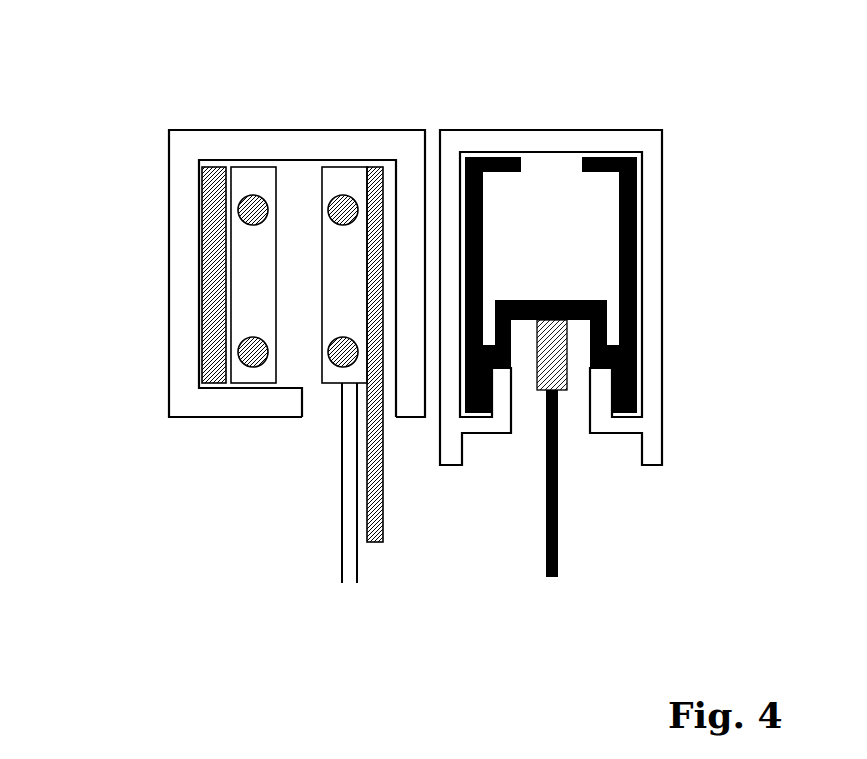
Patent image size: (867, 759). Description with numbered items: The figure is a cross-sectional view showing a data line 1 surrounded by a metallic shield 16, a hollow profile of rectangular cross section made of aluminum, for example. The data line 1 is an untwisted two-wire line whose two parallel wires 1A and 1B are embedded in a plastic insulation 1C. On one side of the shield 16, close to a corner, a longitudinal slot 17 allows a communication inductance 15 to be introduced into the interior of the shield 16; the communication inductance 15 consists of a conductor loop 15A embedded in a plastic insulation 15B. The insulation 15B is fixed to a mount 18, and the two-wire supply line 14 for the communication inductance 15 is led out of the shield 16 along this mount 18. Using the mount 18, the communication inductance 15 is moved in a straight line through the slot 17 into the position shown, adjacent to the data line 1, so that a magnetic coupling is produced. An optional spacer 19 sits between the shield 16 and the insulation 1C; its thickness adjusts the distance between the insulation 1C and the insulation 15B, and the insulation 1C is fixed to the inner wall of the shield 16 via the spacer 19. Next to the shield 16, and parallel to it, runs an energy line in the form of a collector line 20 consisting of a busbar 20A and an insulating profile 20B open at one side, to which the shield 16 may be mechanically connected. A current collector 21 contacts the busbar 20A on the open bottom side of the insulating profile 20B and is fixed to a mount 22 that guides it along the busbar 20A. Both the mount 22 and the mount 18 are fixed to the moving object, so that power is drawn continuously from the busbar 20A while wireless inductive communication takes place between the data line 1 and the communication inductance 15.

The data line 1 is at (181, 244).
The wire 1A is at (252, 198).
The wire 1B is at (247, 363).
The insulation 1C is at (245, 298).
The two-wire supply line 14 is at (343, 570).
The communication inductance 15 is at (361, 200).
The conductor loop 15A is at (342, 198).
The insulation 15B is at (347, 180).
The shield 16 is at (178, 210).
The longitudinal slot 17 is at (320, 407).
The mount 18 is at (368, 502).
The spacer 19 is at (207, 263).
The collector line 20 is at (596, 248).
The busbar 20A is at (637, 238).
The insulating profile 20B is at (546, 132).
The current collector 21 is at (553, 377).
The mount 22 is at (558, 513).